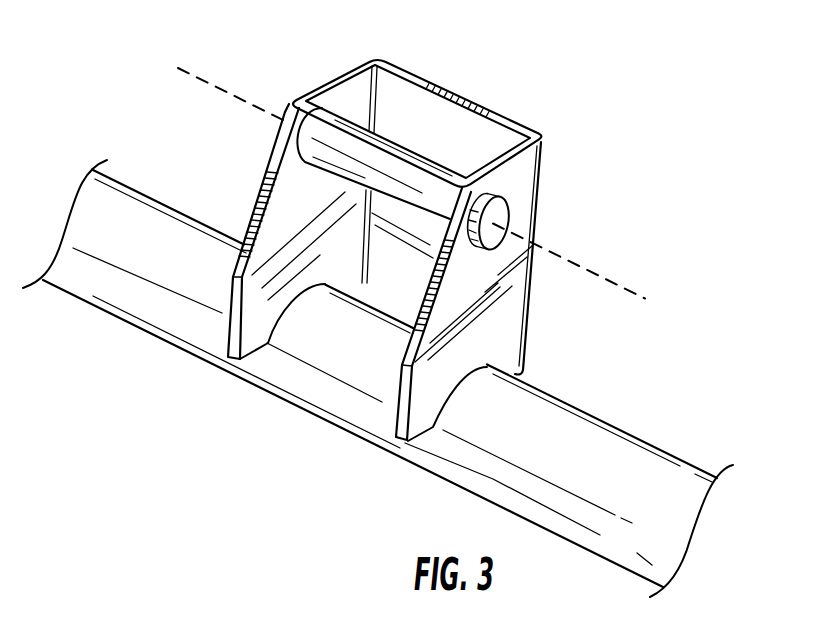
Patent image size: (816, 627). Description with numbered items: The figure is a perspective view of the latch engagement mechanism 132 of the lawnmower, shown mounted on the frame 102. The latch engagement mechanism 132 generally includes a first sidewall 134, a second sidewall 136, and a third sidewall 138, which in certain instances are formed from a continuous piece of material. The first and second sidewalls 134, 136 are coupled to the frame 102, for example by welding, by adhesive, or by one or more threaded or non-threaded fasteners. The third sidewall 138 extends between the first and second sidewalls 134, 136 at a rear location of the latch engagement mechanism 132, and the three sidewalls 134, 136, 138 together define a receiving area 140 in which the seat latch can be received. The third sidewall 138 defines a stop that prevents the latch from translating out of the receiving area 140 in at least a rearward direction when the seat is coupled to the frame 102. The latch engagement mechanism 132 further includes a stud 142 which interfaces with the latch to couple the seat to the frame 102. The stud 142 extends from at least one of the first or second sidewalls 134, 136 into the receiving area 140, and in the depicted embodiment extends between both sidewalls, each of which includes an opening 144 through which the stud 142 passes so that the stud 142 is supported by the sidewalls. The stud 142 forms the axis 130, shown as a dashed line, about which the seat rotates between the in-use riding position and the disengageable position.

The frame 102 is at (634, 461).
The axis 130 is at (620, 286).
The latch engagement mechanism 132 is at (403, 236).
The first sidewall 134 is at (258, 204).
The second sidewall 136 is at (517, 328).
The third sidewall 138 is at (497, 113).
The receiving area 140 is at (418, 100).
The stud 142 is at (326, 128).
The opening 144 is at (493, 212).